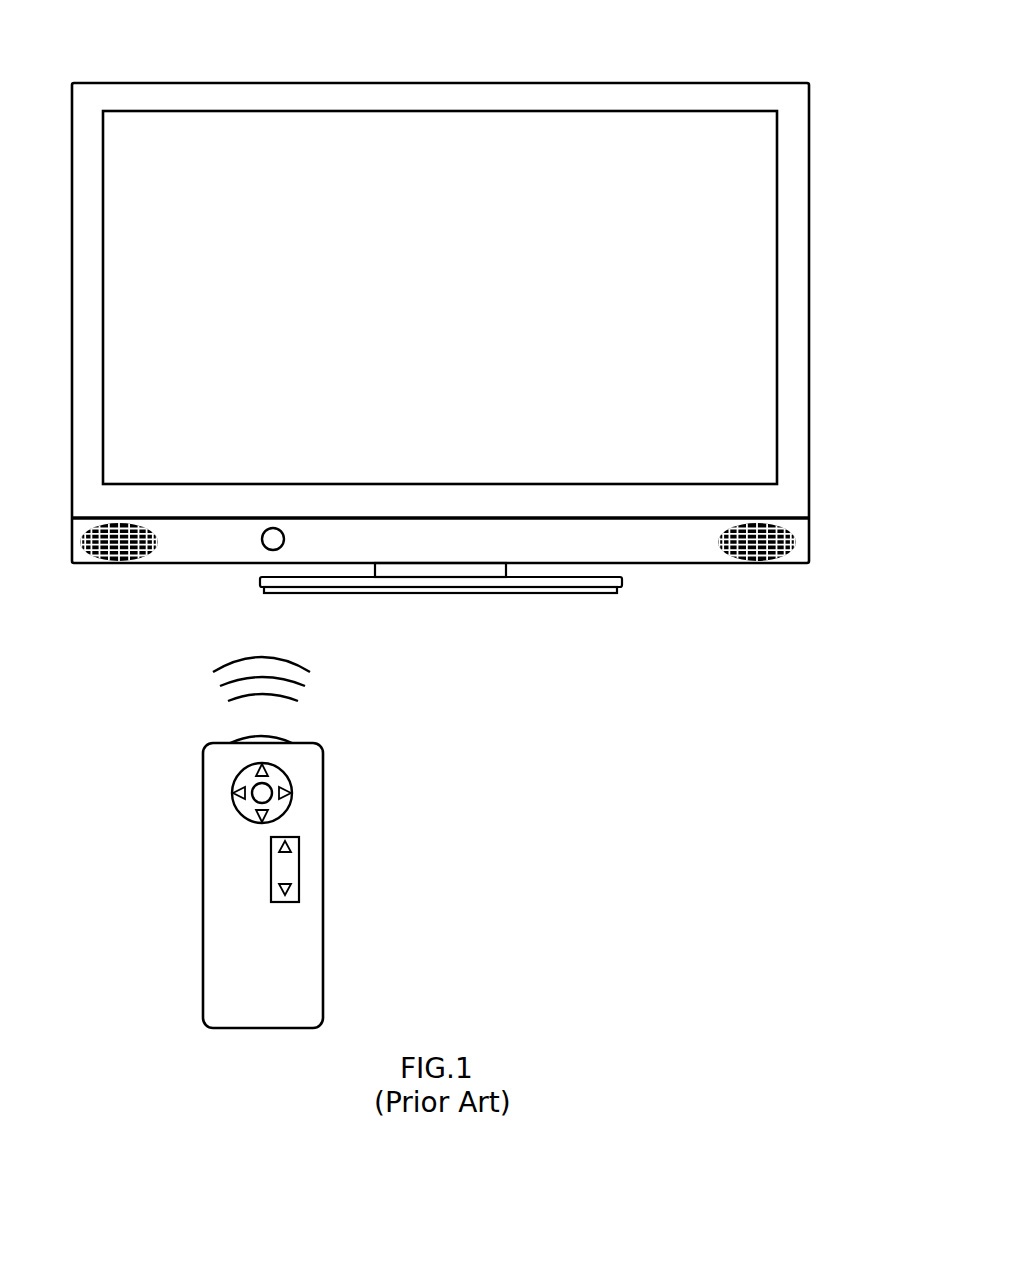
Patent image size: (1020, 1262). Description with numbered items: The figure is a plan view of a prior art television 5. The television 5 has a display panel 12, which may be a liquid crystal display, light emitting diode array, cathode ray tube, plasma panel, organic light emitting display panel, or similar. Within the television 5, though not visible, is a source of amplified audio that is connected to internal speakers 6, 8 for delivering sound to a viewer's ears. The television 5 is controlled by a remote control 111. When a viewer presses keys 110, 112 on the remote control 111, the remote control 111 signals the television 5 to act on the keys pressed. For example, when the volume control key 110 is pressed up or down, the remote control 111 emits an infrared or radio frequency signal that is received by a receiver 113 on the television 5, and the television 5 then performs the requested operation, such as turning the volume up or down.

The television 5 is at (898, 183).
The display panel 12 is at (598, 125).
The internal speaker 6 is at (118, 560).
The internal speaker 8 is at (772, 562).
The receiver 113 is at (270, 550).
The remote control 111 is at (203, 923).
The keys 112 is at (232, 796).
The volume control key 110 is at (293, 867).